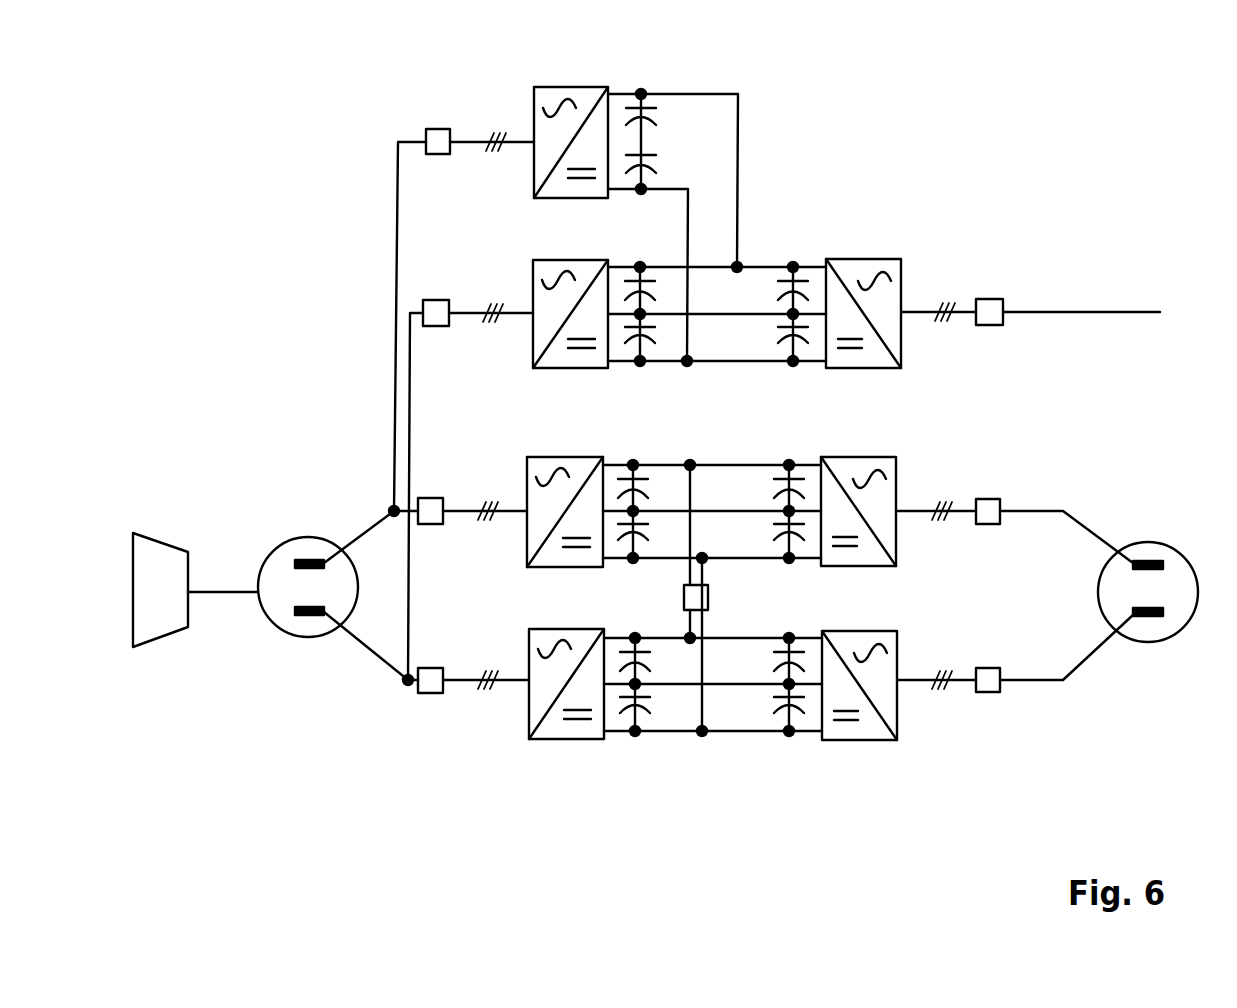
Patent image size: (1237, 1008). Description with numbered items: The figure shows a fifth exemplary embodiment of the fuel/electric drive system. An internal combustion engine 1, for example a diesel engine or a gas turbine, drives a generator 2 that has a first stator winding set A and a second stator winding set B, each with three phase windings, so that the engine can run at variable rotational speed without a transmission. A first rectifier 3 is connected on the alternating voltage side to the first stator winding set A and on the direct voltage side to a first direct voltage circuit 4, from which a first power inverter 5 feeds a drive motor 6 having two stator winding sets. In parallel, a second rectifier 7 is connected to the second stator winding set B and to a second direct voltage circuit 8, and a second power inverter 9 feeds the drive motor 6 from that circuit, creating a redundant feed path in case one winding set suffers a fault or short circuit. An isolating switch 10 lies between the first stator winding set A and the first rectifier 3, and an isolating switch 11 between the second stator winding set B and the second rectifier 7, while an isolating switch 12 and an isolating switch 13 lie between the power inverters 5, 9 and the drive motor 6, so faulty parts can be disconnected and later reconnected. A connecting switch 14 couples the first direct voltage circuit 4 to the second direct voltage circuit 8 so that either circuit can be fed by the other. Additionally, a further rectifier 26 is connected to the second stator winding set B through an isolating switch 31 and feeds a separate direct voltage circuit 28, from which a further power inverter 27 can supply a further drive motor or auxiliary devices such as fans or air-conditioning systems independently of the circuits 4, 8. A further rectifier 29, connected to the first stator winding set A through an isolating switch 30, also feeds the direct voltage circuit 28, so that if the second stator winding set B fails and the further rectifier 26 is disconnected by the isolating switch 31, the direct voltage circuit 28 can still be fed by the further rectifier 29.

The internal combustion engine 1 is at (155, 533).
The generator 2 is at (279, 442).
The first stator winding set A is at (302, 560).
The second stator winding set B is at (302, 617).
The first rectifier 3 is at (546, 457).
The first direct voltage circuit 4 is at (720, 448).
The first power inverter 5 is at (869, 457).
The drive motor 6 is at (1168, 543).
The second rectifier 7 is at (573, 740).
The second direct voltage circuit 8 is at (726, 756).
The second power inverter 9 is at (855, 742).
The isolating switch 10 is at (430, 498).
The isolating switch 11 is at (430, 693).
The isolating switch 12 is at (988, 499).
The isolating switch 13 is at (997, 692).
The connecting switch 14 is at (685, 585).
The further rectifier 26 is at (548, 260).
The further power inverter 27 is at (856, 259).
The direct voltage circuit 28 is at (721, 250).
The further rectifier 29 is at (547, 87).
The isolating switch 30 is at (436, 129).
The isolating switch 31 is at (431, 300).